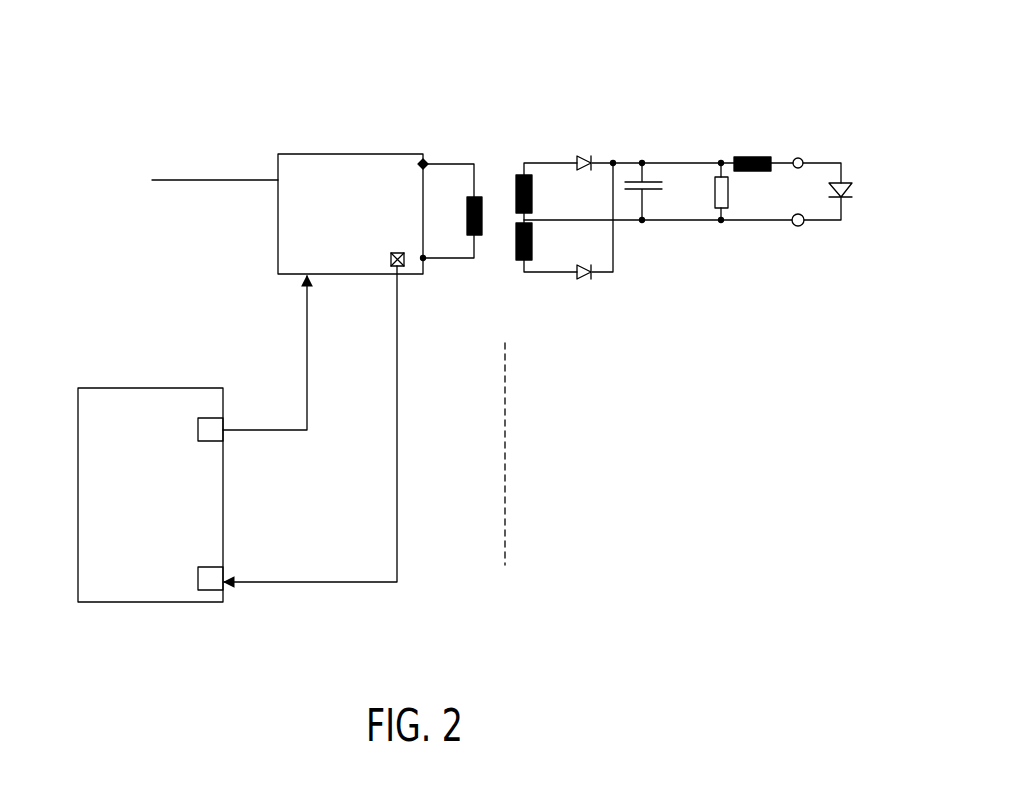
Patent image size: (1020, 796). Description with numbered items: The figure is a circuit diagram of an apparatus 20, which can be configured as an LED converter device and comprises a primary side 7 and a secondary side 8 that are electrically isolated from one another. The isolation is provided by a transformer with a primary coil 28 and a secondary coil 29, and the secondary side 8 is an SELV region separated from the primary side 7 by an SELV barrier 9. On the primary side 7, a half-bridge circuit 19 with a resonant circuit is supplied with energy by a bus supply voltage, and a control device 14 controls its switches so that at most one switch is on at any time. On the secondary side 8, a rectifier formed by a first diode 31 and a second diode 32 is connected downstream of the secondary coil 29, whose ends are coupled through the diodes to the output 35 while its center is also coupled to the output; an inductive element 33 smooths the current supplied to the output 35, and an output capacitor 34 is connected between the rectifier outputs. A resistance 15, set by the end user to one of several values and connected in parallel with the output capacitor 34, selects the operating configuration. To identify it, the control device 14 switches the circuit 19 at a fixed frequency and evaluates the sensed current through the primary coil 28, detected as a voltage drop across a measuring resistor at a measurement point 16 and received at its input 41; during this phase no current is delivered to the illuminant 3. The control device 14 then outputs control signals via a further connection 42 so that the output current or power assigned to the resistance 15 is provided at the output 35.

The apparatus 20 is at (93, 72).
The primary side 7 is at (183, 97).
The secondary side 8 is at (537, 88).
The SELV barrier 9 is at (506, 545).
The half-bridge circuit 19 is at (362, 233).
The measurement point 16 is at (402, 266).
The primary coil 28 is at (484, 240).
The secondary coil 29 is at (516, 170).
The first diode 31 is at (587, 155).
The second diode 32 is at (586, 283).
The output capacitor 34 is at (664, 190).
The resistance 15 is at (738, 222).
The inductive element 33 is at (757, 157).
The output 35 is at (800, 158).
The illuminant 3 is at (851, 185).
The control device 14 is at (118, 508).
The further connection 42 is at (197, 430).
The input 41 is at (197, 580).